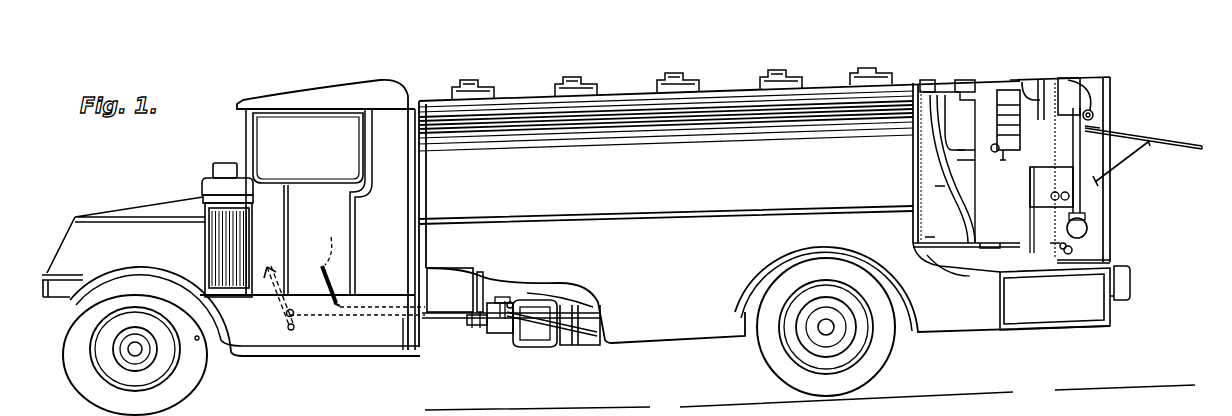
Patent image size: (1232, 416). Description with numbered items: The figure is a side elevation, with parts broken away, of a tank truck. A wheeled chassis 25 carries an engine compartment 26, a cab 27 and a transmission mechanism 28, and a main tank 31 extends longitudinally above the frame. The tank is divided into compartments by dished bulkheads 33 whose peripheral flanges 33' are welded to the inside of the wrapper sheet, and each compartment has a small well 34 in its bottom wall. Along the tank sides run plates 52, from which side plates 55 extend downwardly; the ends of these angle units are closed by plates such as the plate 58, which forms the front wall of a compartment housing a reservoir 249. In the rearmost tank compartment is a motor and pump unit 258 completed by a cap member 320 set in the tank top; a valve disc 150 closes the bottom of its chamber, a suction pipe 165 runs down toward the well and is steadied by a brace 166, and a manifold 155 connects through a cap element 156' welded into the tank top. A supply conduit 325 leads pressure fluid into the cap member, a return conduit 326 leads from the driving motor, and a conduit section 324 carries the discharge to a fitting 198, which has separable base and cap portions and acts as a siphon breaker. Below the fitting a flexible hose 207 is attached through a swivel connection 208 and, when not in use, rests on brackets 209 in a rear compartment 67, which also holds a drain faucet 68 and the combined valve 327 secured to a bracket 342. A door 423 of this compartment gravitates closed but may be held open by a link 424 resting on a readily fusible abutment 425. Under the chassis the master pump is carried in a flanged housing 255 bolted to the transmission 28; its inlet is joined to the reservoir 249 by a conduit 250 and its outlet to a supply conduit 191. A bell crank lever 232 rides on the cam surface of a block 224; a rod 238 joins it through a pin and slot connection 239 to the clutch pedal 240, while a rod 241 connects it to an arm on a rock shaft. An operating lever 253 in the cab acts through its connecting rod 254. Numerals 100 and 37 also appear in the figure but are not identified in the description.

The engine compartment 26 is at (83, 218).
The cab 27 is at (376, 133).
The wheeled chassis 25 is at (365, 340).
The operating lever 253 is at (321, 264).
The pin and slot connection 239 is at (292, 310).
The clutch pedal 240 is at (282, 313).
The connecting rod 254 is at (367, 303).
The rod 238 is at (403, 320).
The plate 52 is at (645, 208).
The main tank 31 is at (610, 117).
The side plate 55 is at (680, 318).
The reservoir 249 is at (447, 277).
The supply conduit 191 is at (487, 283).
The end plate 58 is at (432, 325).
The conduit 250 is at (470, 327).
The cam block 224 is at (495, 335).
The bell crank lever 232 is at (507, 300).
The rod 241 is at (560, 320).
The flanged housing 255 is at (520, 347).
The transmission mechanism 28 is at (565, 346).
The compartment 67 is at (1107, 96).
The valve disc 150 is at (948, 118).
The suction pipe 165 is at (957, 150).
The brace 166 is at (957, 160).
The dished bulkhead 33 is at (956, 184).
The peripheral flange 33' is at (977, 252).
The cap element 156' is at (926, 72).
The manifold 155 is at (968, 80).
The tank top 100 is at (868, 75).
The cap member 320 is at (995, 120).
The pump unit 258 is at (995, 135).
The return conduit 326 is at (1025, 80).
The conduit section 324 is at (1040, 78).
The supply conduit 325 is at (1060, 80).
The fitting 198 is at (1078, 82).
The bracket 209 is at (1092, 126).
The combined valve 327 is at (1100, 127).
The door 423 is at (1180, 140).
The link 424 is at (1148, 148).
The fusible abutment 425 is at (1098, 182).
The flexible hose 207 is at (1086, 197).
The swivel connection 208 is at (1086, 228).
The bracket 342 is at (1040, 187).
The well 34 is at (985, 242).
The drain faucet 68 is at (1105, 250).
The ground 37 is at (810, 400).